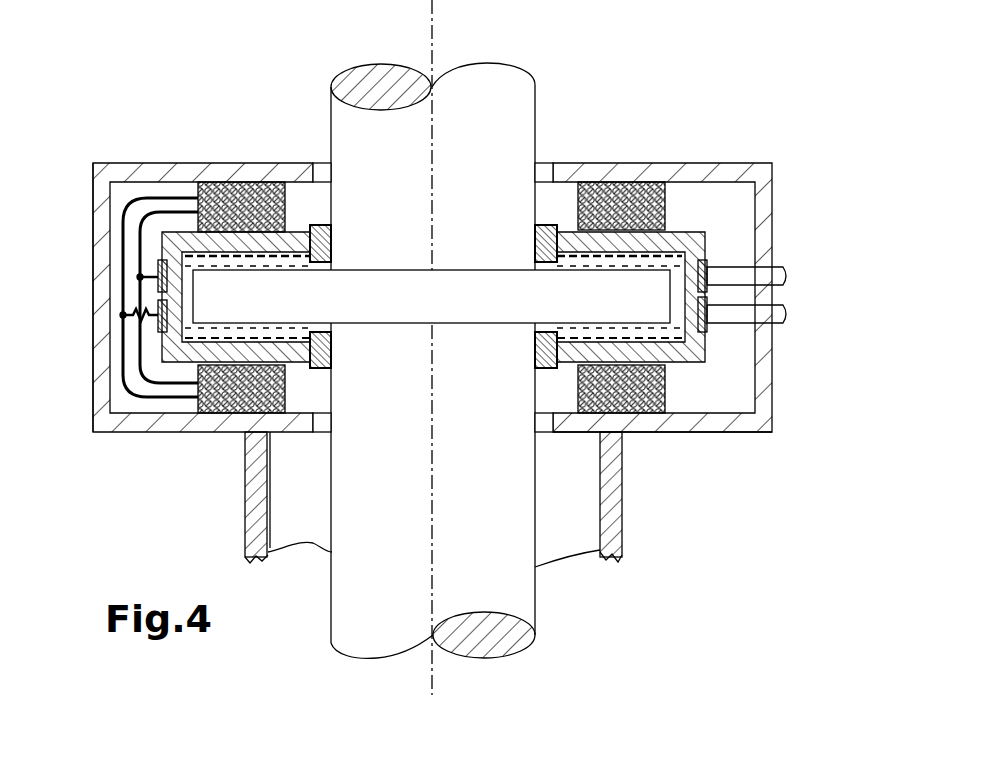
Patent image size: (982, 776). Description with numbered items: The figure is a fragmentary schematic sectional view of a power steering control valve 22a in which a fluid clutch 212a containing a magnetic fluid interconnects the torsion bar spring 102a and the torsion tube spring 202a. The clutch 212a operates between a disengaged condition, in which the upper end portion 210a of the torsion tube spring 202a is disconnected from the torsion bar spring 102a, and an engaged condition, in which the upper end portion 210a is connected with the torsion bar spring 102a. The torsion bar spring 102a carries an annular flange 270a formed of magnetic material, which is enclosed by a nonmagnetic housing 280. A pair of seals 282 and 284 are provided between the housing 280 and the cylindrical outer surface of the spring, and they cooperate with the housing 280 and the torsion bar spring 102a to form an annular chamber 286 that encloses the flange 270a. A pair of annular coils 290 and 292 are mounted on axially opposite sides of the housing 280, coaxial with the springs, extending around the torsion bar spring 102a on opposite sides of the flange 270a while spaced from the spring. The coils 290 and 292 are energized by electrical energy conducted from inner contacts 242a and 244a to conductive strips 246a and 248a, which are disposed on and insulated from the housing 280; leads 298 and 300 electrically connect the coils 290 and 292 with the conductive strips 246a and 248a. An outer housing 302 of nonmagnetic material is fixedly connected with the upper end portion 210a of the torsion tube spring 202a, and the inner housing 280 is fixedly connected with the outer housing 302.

The power steering control valve 22a is at (728, 78).
The torsion bar spring 102a is at (505, 583).
The torsion tube spring 202a is at (636, 494).
The upper end portion 210a is at (257, 452).
The clutch 212a is at (820, 172).
The inner contact 242a is at (782, 266).
The inner contact 244a is at (782, 324).
The conductive strip 246a is at (706, 263).
The conductive strip 248a is at (707, 327).
The annular flange 270a is at (277, 300).
The housing 280 is at (707, 357).
The seal 282 is at (330, 237).
The seal 284 is at (323, 348).
The chamber 286 is at (578, 230).
The annular coil 290 is at (240, 180).
The annular coil 292 is at (218, 413).
The lead 298 is at (155, 197).
The lead 300 is at (110, 417).
The outer housing 302 is at (722, 414).